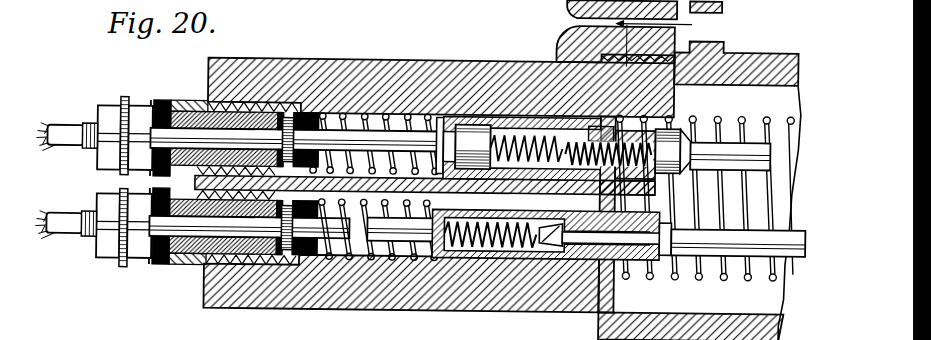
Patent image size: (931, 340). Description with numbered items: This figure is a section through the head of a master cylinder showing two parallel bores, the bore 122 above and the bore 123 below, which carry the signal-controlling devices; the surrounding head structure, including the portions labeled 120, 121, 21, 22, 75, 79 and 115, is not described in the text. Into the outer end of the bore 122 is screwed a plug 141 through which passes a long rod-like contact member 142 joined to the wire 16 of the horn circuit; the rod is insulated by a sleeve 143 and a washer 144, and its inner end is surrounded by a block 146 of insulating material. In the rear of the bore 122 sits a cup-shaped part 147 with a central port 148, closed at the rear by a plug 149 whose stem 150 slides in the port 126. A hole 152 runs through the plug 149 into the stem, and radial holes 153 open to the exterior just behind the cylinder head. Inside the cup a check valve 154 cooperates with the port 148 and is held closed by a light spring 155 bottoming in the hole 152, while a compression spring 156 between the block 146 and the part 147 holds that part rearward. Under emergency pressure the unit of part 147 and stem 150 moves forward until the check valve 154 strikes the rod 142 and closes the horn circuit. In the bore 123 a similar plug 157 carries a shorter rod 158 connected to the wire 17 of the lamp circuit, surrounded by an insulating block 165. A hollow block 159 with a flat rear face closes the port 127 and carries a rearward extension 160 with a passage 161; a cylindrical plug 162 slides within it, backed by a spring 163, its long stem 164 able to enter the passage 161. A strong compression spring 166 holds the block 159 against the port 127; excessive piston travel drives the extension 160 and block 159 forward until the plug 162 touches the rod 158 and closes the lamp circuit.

The wire 16 is at (50, 129).
The wire 17 is at (58, 242).
The member 21 is at (556, 10).
The direction arrow 22 is at (656, 26).
The block 75 is at (768, 48).
The member 79 is at (572, 42).
The nut 115 is at (130, 108).
The housing 120 is at (260, 60).
The partition 121 is at (630, 196).
The bore 122 is at (352, 114).
The bore 123 is at (340, 263).
The port 126 is at (617, 122).
The port 127 is at (612, 262).
The plug 141 is at (186, 103).
The contact member 142 is at (248, 133).
The sleeve 143 is at (228, 103).
The washer 144 is at (141, 108).
The block 146 is at (312, 112).
The cup-shaped part 147 is at (520, 118).
The port 148 is at (450, 120).
The plug 149 is at (574, 124).
The stem 150 is at (680, 137).
The hole 152 is at (596, 160).
The radial holes 153 is at (664, 126).
The check valve 154 is at (492, 125).
The compression spring 155 is at (525, 132).
The compression spring 156 is at (382, 114).
The plug 157 is at (170, 258).
The rod 158 is at (153, 234).
The block 159 is at (505, 258).
The extension 160 is at (680, 253).
The passage 161 is at (660, 252).
The cylindrical plug 162 is at (397, 263).
The spring 163 is at (457, 250).
The stem 164 is at (525, 250).
The block of insulating material 165 is at (298, 262).
The compression spring 166 is at (380, 263).